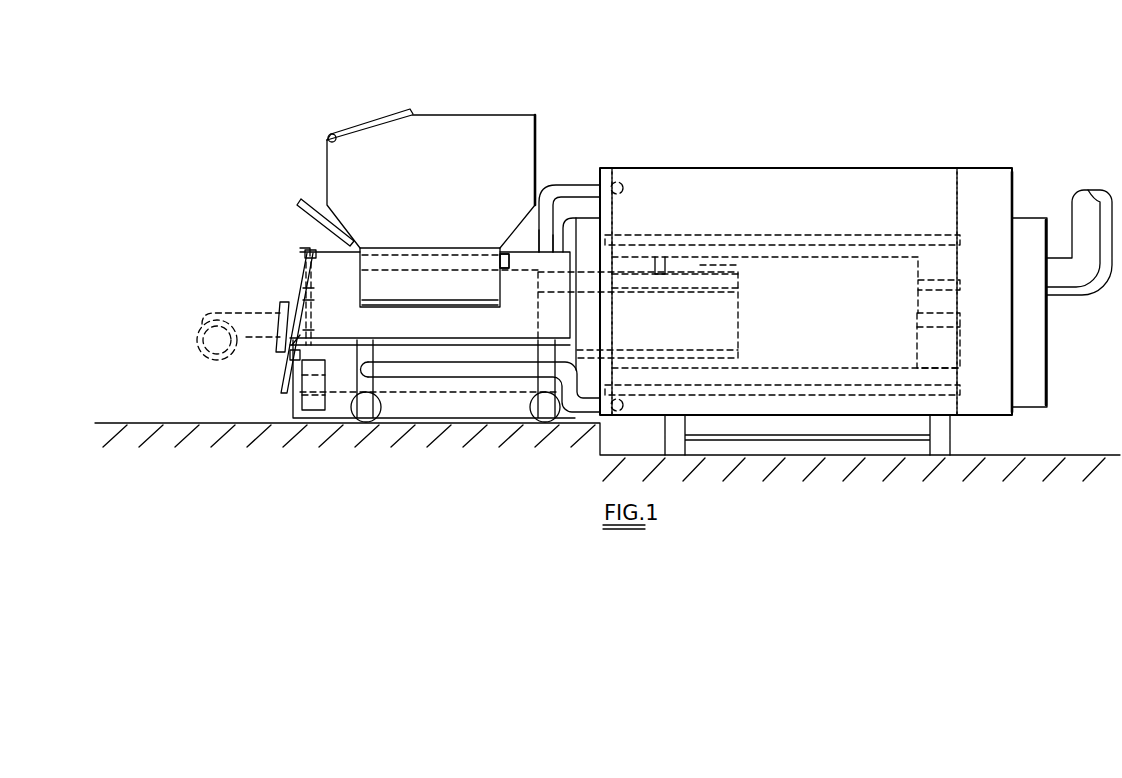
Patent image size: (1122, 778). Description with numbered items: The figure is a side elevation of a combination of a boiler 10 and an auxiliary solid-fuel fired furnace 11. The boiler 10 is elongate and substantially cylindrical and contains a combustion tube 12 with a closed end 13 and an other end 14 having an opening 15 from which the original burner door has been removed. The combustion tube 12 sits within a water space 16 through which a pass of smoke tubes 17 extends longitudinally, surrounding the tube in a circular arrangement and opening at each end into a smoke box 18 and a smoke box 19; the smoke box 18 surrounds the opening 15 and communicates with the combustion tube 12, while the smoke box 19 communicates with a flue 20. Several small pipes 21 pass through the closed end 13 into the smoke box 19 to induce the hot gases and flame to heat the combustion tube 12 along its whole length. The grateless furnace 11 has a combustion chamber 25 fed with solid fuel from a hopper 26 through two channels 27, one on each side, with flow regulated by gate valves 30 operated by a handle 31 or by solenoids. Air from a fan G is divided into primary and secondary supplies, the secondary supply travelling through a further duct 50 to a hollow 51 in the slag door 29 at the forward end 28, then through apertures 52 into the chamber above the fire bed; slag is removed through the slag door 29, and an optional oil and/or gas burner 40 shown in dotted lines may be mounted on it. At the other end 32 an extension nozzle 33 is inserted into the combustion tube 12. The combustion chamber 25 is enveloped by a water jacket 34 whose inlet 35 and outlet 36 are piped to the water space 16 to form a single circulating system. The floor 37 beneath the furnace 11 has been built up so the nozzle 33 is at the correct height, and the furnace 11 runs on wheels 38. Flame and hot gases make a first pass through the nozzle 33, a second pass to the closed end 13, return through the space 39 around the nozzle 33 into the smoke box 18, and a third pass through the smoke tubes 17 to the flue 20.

The boiler 10 is at (705, 163).
The auxiliary solid-fuel fired furnace 11 is at (455, 107).
The combustion tube 12 is at (848, 259).
The closed end 13 is at (918, 315).
The other end 14 is at (675, 269).
The opening 15 is at (614, 318).
The water space 16 is at (784, 291).
The smoke tubes 17 is at (655, 237).
The smoke box 18 is at (605, 172).
The smoke box 19 is at (987, 170).
The flue 20 is at (1084, 190).
The small pipes 21 is at (963, 285).
The combustion chamber 25 is at (300, 310).
The hopper 26 is at (537, 125).
The channels 27 is at (435, 293).
The forward end 28 is at (301, 254).
The slag door 29 is at (286, 300).
The gate valves 30 is at (412, 247).
The handle 31 is at (299, 204).
The other end 32 is at (565, 240).
The extension nozzle 33 is at (740, 318).
The water jacket 34 is at (510, 271).
The inlet 35 is at (452, 376).
The outlet 36 is at (561, 183).
The floor 37 is at (540, 420).
The wheels 38 is at (367, 416).
The space 39 is at (708, 265).
The oil and/or gas burner 40 is at (206, 362).
The further duct 50 is at (292, 358).
The hollow 51 is at (280, 300).
The apertures 52 is at (308, 254).
The fan G is at (312, 419).